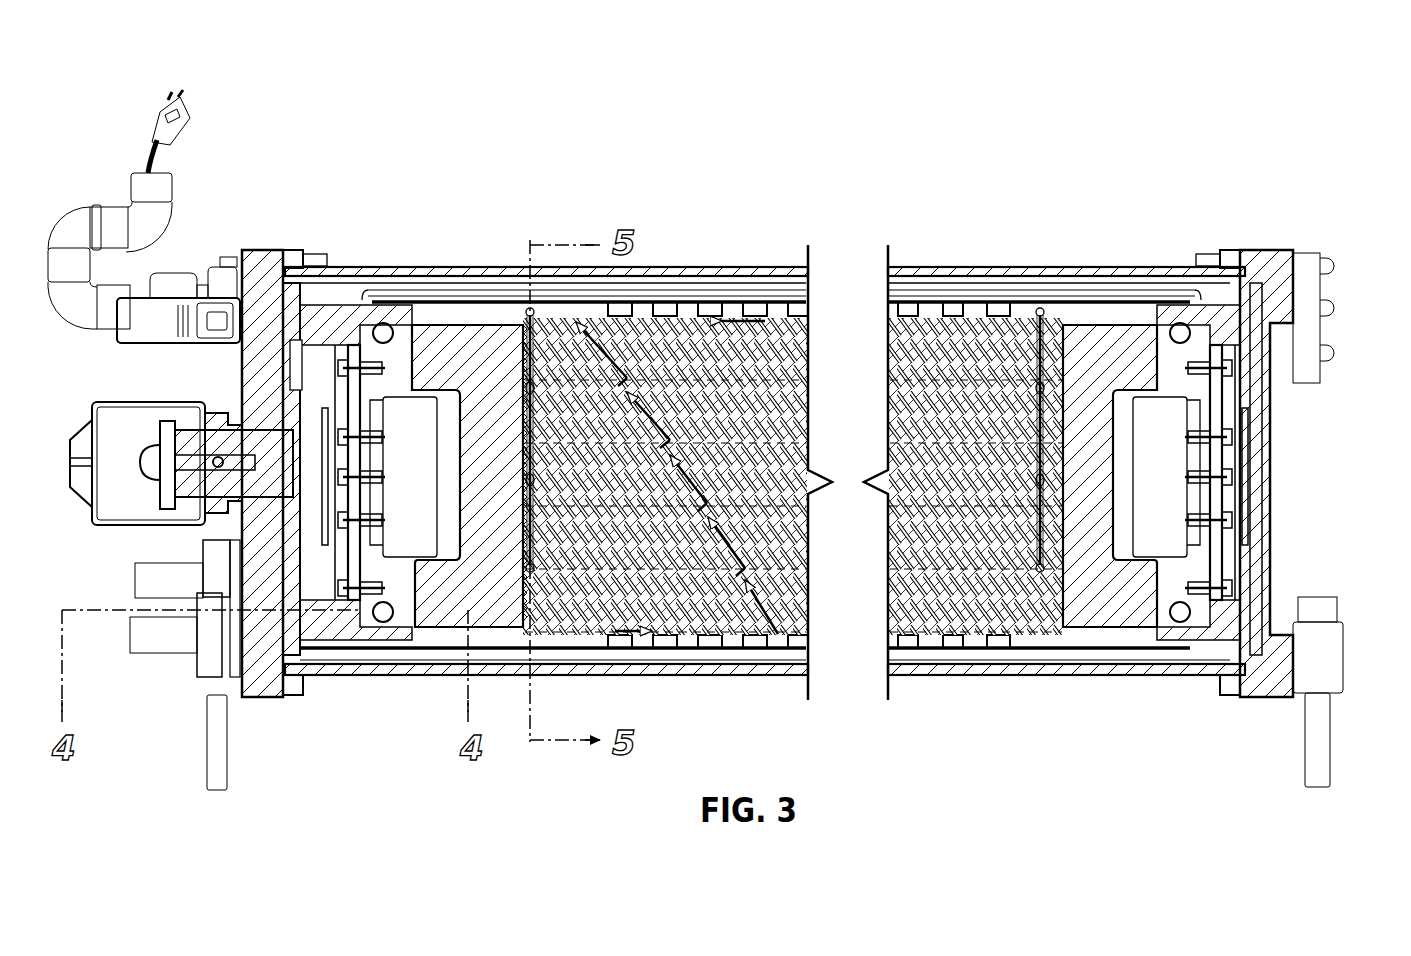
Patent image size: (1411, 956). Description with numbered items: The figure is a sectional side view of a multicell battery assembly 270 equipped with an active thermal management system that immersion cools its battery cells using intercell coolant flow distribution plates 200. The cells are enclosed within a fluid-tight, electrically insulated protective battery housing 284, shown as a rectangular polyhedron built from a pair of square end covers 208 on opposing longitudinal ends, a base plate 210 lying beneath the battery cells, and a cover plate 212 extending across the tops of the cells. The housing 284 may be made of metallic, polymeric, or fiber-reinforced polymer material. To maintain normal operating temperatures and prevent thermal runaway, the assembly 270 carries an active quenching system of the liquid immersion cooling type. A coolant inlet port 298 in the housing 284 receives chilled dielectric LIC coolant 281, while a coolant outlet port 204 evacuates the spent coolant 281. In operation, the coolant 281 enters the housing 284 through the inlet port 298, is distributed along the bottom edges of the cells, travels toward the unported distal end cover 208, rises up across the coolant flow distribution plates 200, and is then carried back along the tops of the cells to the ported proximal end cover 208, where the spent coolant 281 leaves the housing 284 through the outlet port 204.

The battery assembly 270 is at (1242, 122).
The battery housing 284 is at (540, 212).
The cover plate 212 is at (468, 268).
The dielectric LIC coolant 281 is at (743, 320).
The coolant flow distribution plates 200 is at (922, 262).
The end covers 208 is at (250, 376).
The coolant outlet port 204 is at (140, 600).
The coolant inlet port 298 is at (145, 650).
The base plate 210 is at (375, 675).